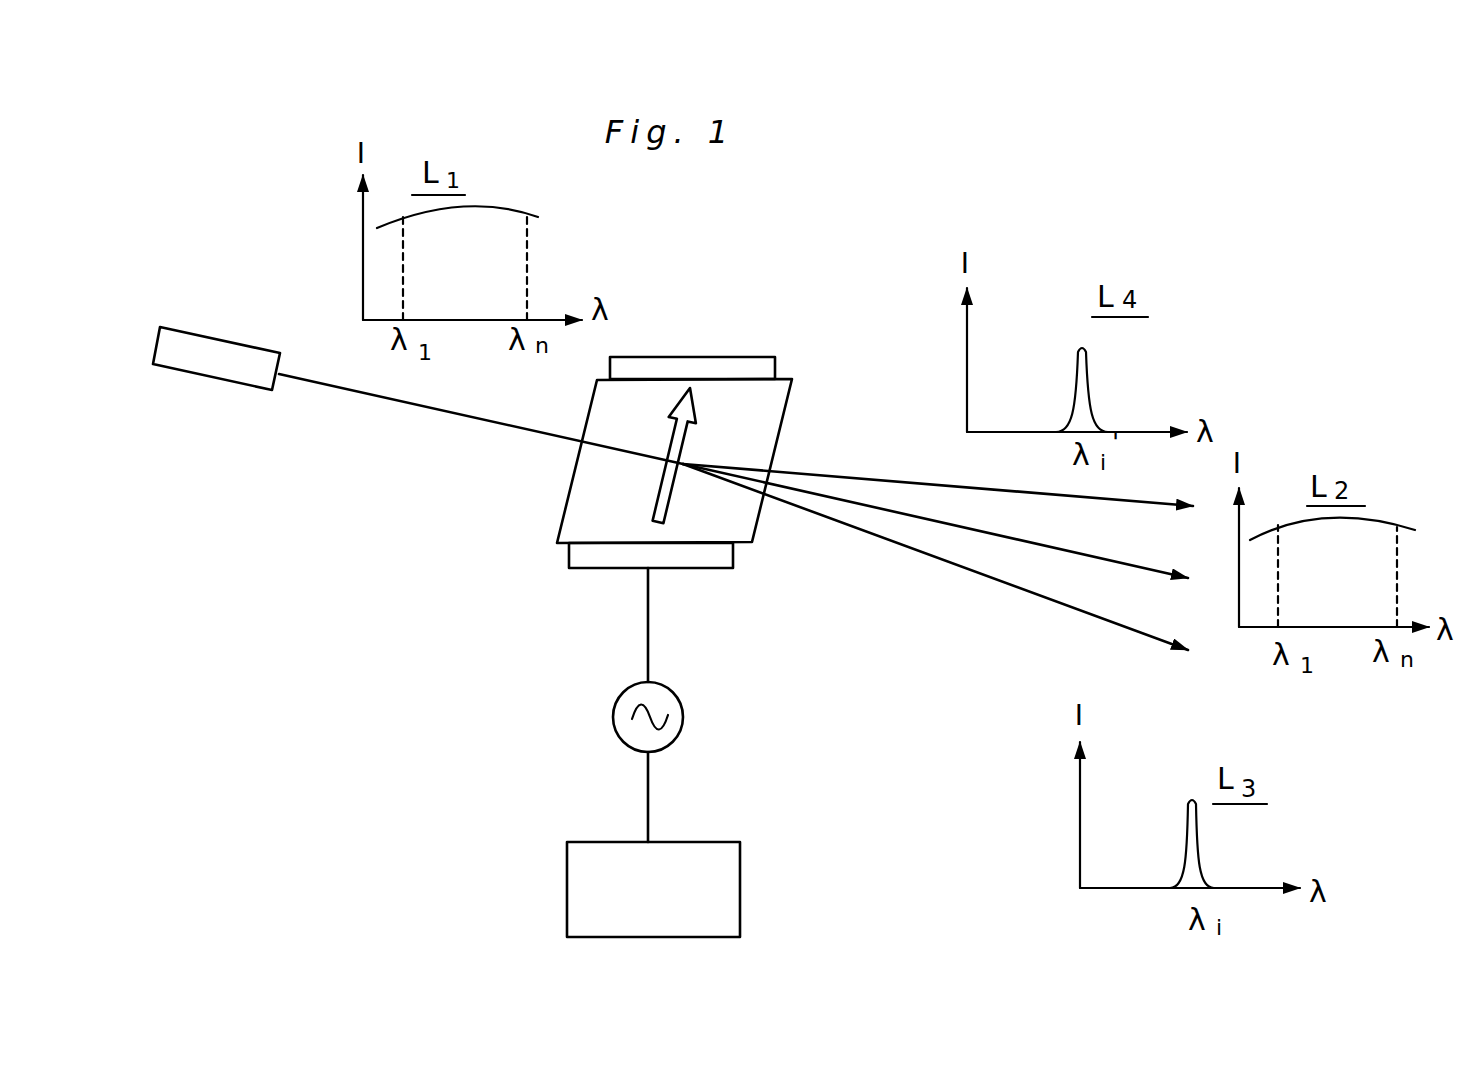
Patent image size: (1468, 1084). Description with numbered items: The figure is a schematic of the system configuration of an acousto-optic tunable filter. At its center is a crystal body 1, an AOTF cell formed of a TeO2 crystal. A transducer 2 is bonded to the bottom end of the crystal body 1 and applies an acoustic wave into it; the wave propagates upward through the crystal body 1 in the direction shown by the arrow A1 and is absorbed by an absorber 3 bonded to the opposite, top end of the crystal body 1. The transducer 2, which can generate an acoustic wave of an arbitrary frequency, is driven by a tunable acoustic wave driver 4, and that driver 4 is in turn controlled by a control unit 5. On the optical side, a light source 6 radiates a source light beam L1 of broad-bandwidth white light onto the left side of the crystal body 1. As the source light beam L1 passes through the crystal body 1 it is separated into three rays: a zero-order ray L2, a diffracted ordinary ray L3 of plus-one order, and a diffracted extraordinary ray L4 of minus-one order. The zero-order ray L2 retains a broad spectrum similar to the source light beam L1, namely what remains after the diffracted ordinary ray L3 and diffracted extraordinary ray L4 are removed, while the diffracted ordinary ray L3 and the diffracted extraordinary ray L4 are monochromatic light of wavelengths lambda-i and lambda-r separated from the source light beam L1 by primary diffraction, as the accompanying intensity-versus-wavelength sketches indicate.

The crystal body 1 is at (560, 525).
The transducer 2 is at (733, 568).
The absorber 3 is at (775, 356).
The tunable acoustic wave driver 4 is at (683, 717).
The control unit 5 is at (740, 890).
The light source 6 is at (180, 370).
The source light beam L1 is at (343, 388).
The 0-order ray L2 is at (1022, 540).
The diffracted ordinary ray L3 is at (982, 577).
The diffracted extraordinary ray L4 is at (872, 478).
The acoustic wave propagation arrow A1 is at (687, 438).